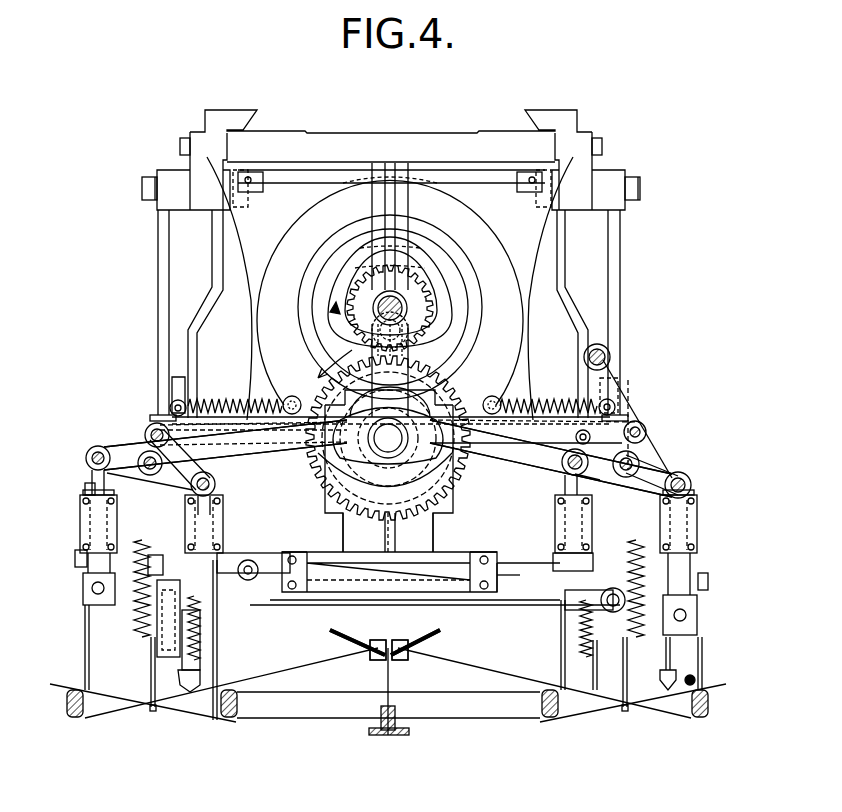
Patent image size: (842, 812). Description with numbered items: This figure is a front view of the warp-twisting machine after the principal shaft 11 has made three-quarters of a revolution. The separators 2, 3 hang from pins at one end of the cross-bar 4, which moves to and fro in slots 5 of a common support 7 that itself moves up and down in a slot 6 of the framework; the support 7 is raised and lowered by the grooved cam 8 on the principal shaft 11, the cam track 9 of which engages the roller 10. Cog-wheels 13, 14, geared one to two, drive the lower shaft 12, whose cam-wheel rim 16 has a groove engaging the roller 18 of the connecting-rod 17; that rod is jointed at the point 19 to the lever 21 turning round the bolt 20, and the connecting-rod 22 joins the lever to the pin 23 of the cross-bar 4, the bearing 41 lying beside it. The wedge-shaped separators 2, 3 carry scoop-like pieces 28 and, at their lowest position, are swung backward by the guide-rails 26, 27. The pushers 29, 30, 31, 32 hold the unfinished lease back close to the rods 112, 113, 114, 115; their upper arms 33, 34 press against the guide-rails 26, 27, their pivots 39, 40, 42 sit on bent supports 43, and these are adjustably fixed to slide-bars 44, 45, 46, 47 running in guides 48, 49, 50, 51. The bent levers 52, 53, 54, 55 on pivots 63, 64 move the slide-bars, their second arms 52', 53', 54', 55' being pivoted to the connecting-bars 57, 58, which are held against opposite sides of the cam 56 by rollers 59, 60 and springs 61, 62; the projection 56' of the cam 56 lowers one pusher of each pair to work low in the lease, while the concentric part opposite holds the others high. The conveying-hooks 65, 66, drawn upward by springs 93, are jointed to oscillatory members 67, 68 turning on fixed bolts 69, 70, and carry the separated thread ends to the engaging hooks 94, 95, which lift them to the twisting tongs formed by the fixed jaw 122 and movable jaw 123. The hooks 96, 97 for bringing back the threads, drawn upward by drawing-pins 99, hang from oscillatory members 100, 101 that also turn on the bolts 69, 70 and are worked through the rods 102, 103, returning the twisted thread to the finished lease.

The separator 2 is at (192, 650).
The separator 3 is at (664, 648).
The cross-bar 4 is at (230, 565).
The slot 5 is at (305, 552).
The slot 6 is at (446, 505).
The support 7 is at (434, 530).
The grooved cam 8 is at (455, 254).
The cam track 9 is at (462, 280).
The roller 10 is at (412, 336).
The principal shaft 11 is at (370, 312).
The shaft 12 is at (388, 438).
The cog-wheel 13 is at (428, 362).
The cog-wheel 14 is at (423, 293).
The gear rim 16 is at (450, 490).
The connecting-rod 17 is at (498, 401).
The roller 18 is at (452, 402).
The joint point 19 is at (576, 437).
The bolt 20 is at (610, 356).
The lever 21 is at (633, 408).
The connecting-rod 22 is at (498, 562).
The pin 23 is at (256, 580).
The guide-rail 26 is at (80, 505).
The guide-rail 27 is at (698, 515).
The scoop-like piece 28 is at (694, 680).
The pusher 29 is at (85, 645).
The pusher 30 is at (561, 648).
The pusher 31 is at (218, 648).
The pusher 32 is at (700, 648).
The upper arm 33 is at (85, 486).
The upper arm 34 is at (562, 486).
The pivot 39 is at (75, 566).
The pivot 40 is at (556, 558).
The bearing 41 is at (244, 581).
The pivot 42 is at (708, 582).
The bent support 43 is at (626, 597).
The slide-bar 44 is at (86, 460).
The slide-bar 45 is at (558, 471).
The slide-bar 46 is at (216, 486).
The slide-bar 47 is at (692, 485).
The guide 48 is at (85, 535).
The guide 49 is at (555, 530).
The guide 50 is at (223, 520).
The guide 51 is at (698, 540).
The bent lever 52 is at (217, 433).
The second arm 52' is at (148, 427).
The bent lever 53 is at (556, 462).
The second arm 53' is at (664, 432).
The bent lever 54 is at (180, 460).
The second arm 54' is at (148, 416).
The bent lever 55 is at (575, 449).
The second arm 55' is at (662, 455).
The cam 56 is at (387, 533).
The projection 56' is at (408, 533).
The connecting-bar 57 is at (250, 445).
The connecting-bar 58 is at (290, 452).
The roller 59 is at (332, 470).
The roller 60 is at (470, 458).
The spring 61 is at (236, 400).
The spring 62 is at (572, 400).
The pivot 63 is at (142, 430).
The pivot 64 is at (660, 468).
The conveying-hook 65 is at (153, 710).
The conveying-hook 66 is at (627, 710).
The oscillatory member 67 is at (160, 305).
The oscillatory member 68 is at (618, 295).
The fixed bolt 69 is at (142, 200).
The fixed bolt 70 is at (633, 200).
The spring 93 is at (645, 616).
The engaging hook 94 is at (342, 632).
The engaging hook 95 is at (437, 632).
The hook for bringing back the threads 96 is at (166, 657).
The hook for bringing back the threads 97 is at (594, 672).
The drawing-pin 99 is at (580, 626).
The oscillatory member 100 is at (196, 340).
The oscillatory member 101 is at (576, 316).
The rod 102 is at (172, 386).
The rod 103 is at (620, 386).
The rod 112 is at (75, 718).
The rod 113 is at (230, 718).
The rod 114 is at (548, 718).
The rod 115 is at (700, 718).
The jaw 122 is at (370, 650).
The movable jaw 123 is at (408, 650).